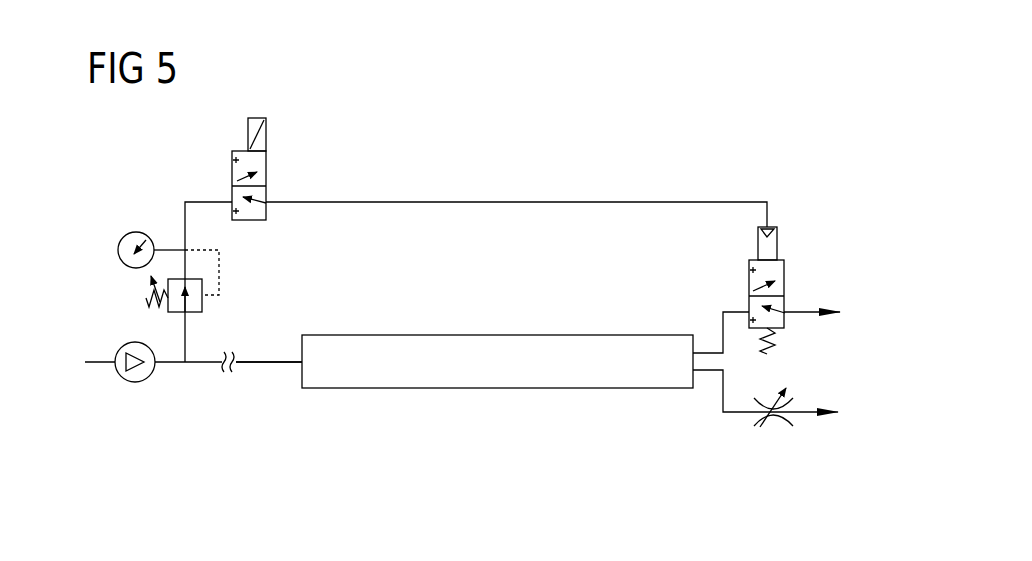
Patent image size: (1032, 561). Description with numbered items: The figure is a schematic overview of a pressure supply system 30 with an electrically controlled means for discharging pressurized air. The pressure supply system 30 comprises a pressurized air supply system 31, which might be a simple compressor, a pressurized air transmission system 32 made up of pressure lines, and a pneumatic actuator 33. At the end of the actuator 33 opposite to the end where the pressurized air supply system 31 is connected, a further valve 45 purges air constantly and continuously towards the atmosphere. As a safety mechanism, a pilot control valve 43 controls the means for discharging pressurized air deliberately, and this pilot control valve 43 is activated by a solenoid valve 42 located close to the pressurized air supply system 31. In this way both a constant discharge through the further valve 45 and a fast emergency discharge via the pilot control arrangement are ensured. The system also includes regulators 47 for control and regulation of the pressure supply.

The pressure supply system 30 is at (328, 433).
The pressurized air supply system 31 is at (130, 382).
The pressurized air transmission system 32 is at (270, 364).
The pneumatic actuator 33 is at (497, 348).
The solenoid valve 42 is at (297, 160).
The pilot control valve 43 is at (803, 244).
The further valve 45 is at (776, 437).
The regulators 47 is at (202, 305).